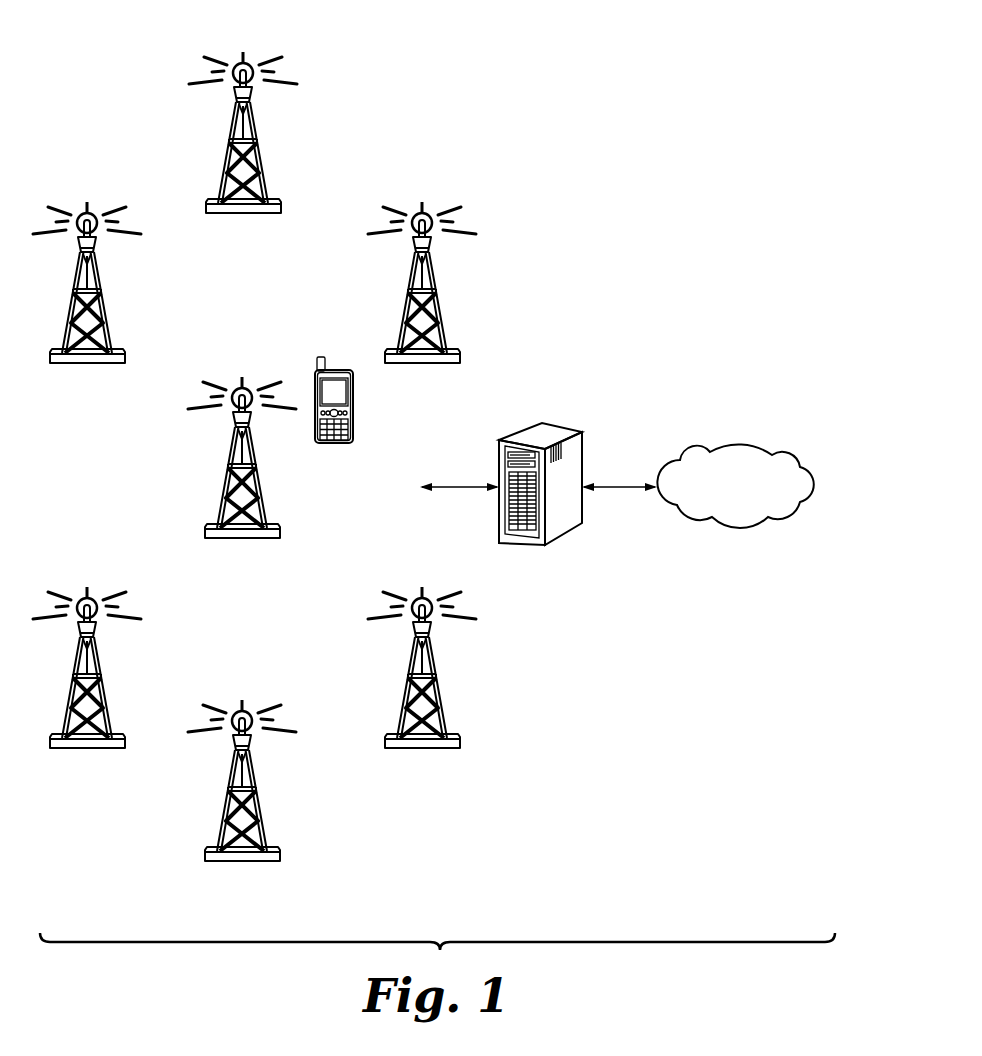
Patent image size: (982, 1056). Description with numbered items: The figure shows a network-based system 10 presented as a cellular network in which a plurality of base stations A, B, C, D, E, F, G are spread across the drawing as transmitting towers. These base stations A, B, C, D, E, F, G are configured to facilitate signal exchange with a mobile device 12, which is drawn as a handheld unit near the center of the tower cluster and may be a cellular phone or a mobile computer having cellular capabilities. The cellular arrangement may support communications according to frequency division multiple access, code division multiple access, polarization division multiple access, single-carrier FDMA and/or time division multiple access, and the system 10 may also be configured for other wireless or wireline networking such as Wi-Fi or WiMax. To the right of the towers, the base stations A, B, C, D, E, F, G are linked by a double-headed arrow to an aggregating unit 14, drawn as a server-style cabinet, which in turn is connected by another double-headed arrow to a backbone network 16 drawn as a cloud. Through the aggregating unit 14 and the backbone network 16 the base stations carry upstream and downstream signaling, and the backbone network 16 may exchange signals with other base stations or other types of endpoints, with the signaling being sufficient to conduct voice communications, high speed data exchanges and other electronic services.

The network-based system 10 is at (578, 118).
The mobile device 12 is at (340, 368).
The aggregating unit 14 is at (560, 428).
The backbone network 16 is at (740, 443).
The base station A is at (87, 282).
The base station B is at (243, 132).
The base station C is at (422, 282).
The base station D is at (422, 667).
The base station E is at (242, 780).
The base station F is at (87, 667).
The base station G is at (242, 457).